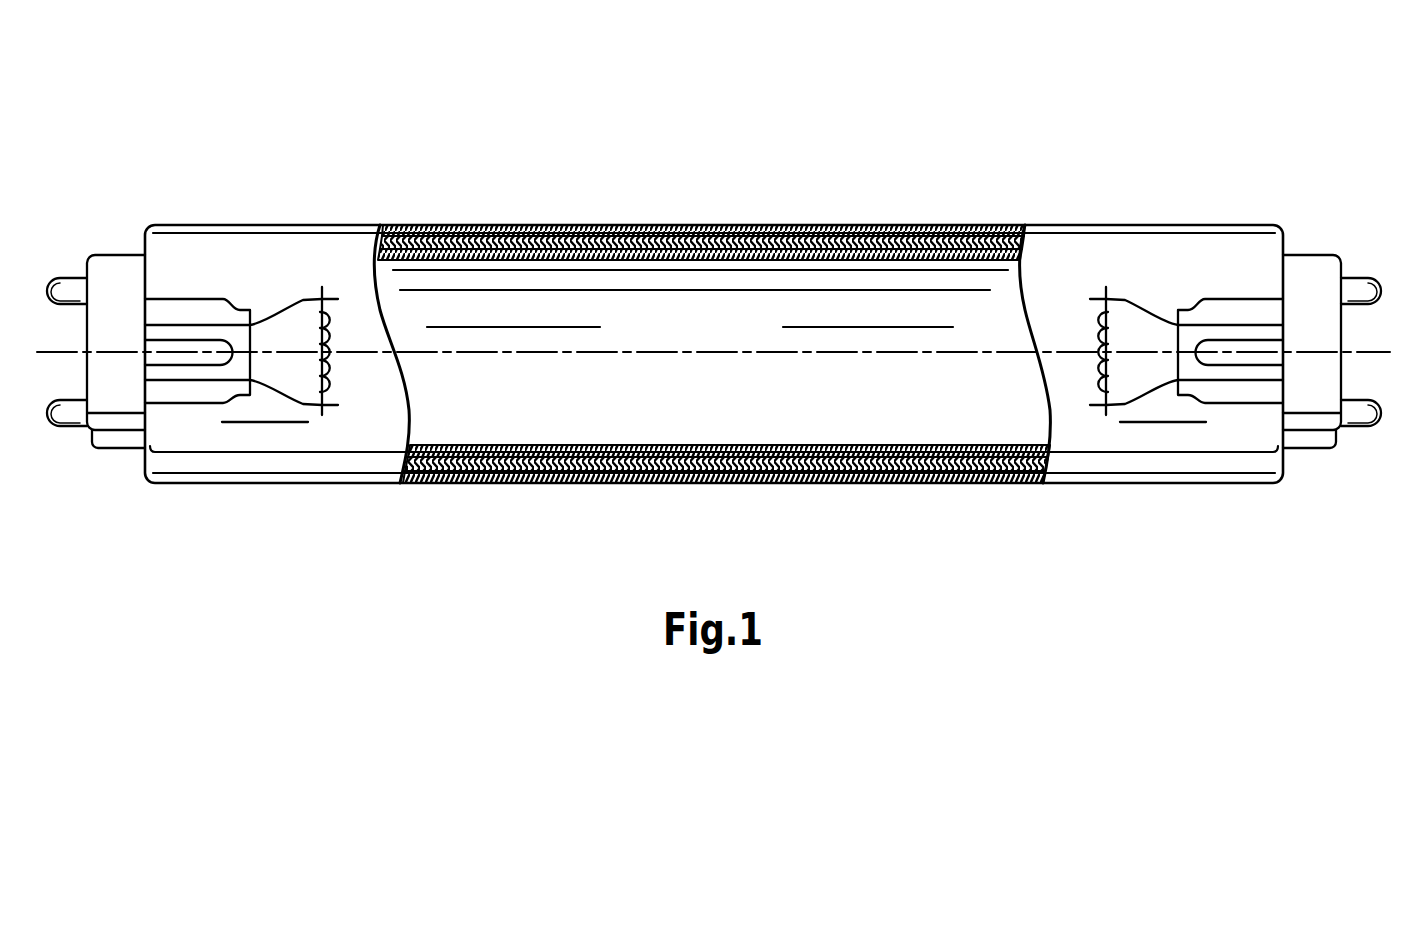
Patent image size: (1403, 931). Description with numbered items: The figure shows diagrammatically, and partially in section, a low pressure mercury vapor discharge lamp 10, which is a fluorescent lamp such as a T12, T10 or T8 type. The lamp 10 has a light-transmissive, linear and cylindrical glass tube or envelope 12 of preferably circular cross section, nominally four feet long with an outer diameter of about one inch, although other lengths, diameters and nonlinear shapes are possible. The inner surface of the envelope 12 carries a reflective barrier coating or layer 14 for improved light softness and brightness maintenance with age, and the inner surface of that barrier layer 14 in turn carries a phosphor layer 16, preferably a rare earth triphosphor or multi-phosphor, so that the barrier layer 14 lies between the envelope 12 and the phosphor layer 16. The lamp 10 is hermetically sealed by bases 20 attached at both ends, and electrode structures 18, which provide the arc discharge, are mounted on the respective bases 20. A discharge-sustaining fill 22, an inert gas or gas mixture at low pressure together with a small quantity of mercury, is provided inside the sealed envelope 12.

The low pressure mercury vapor discharge lamp 10 is at (343, 131).
The glass tube or envelope 12 is at (703, 224).
The reflective barrier coating or layer 14 is at (800, 225).
The phosphor layer 16 is at (892, 225).
The electrode structures 18 is at (330, 372).
The bases 20 is at (101, 438).
The discharge-sustaining fill 22 is at (588, 302).